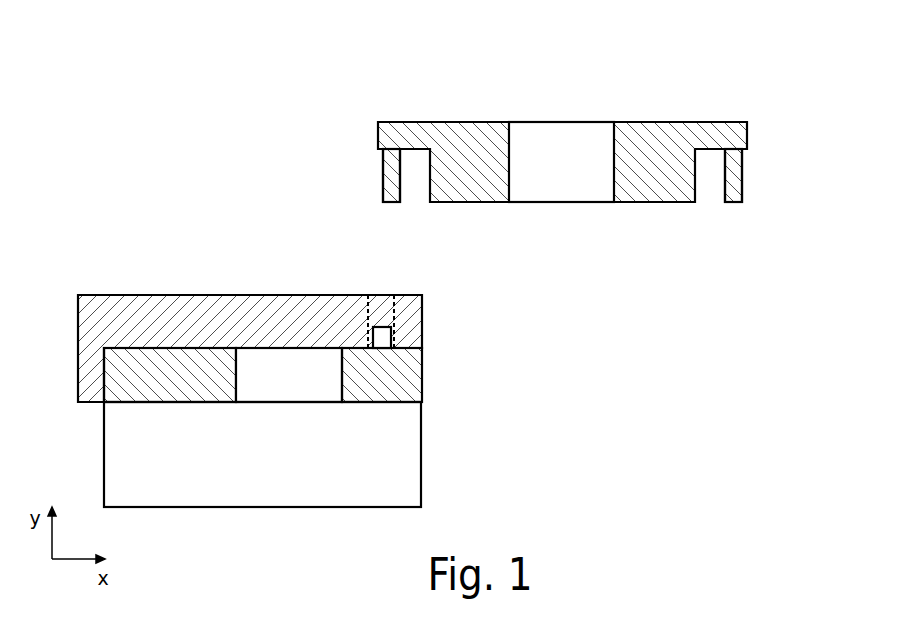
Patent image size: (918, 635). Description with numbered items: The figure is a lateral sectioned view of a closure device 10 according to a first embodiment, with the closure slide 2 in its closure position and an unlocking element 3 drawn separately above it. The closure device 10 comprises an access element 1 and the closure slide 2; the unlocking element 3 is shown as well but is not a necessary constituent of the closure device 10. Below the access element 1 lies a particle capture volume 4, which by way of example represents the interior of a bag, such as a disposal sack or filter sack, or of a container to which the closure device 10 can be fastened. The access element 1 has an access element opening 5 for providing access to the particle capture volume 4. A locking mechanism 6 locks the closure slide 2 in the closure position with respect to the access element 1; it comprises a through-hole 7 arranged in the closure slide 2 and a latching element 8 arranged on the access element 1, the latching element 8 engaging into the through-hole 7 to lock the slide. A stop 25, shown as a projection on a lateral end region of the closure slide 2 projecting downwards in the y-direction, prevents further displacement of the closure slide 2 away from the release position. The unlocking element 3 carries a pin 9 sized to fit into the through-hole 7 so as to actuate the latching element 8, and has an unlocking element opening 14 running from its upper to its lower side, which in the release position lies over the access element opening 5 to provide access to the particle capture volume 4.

The access element 1 is at (423, 383).
The closure slide 2 is at (78, 327).
The unlocking element 3 is at (378, 130).
The particle capture volume 4 is at (410, 472).
The access element opening 5 is at (262, 357).
The locking mechanism 6 is at (382, 290).
The through-hole 7 is at (382, 310).
The latching element 8 is at (382, 337).
The pin 9 is at (382, 183).
The closure device 10 is at (158, 115).
The unlocking element opening 14 is at (562, 142).
The stop 25 is at (85, 377).